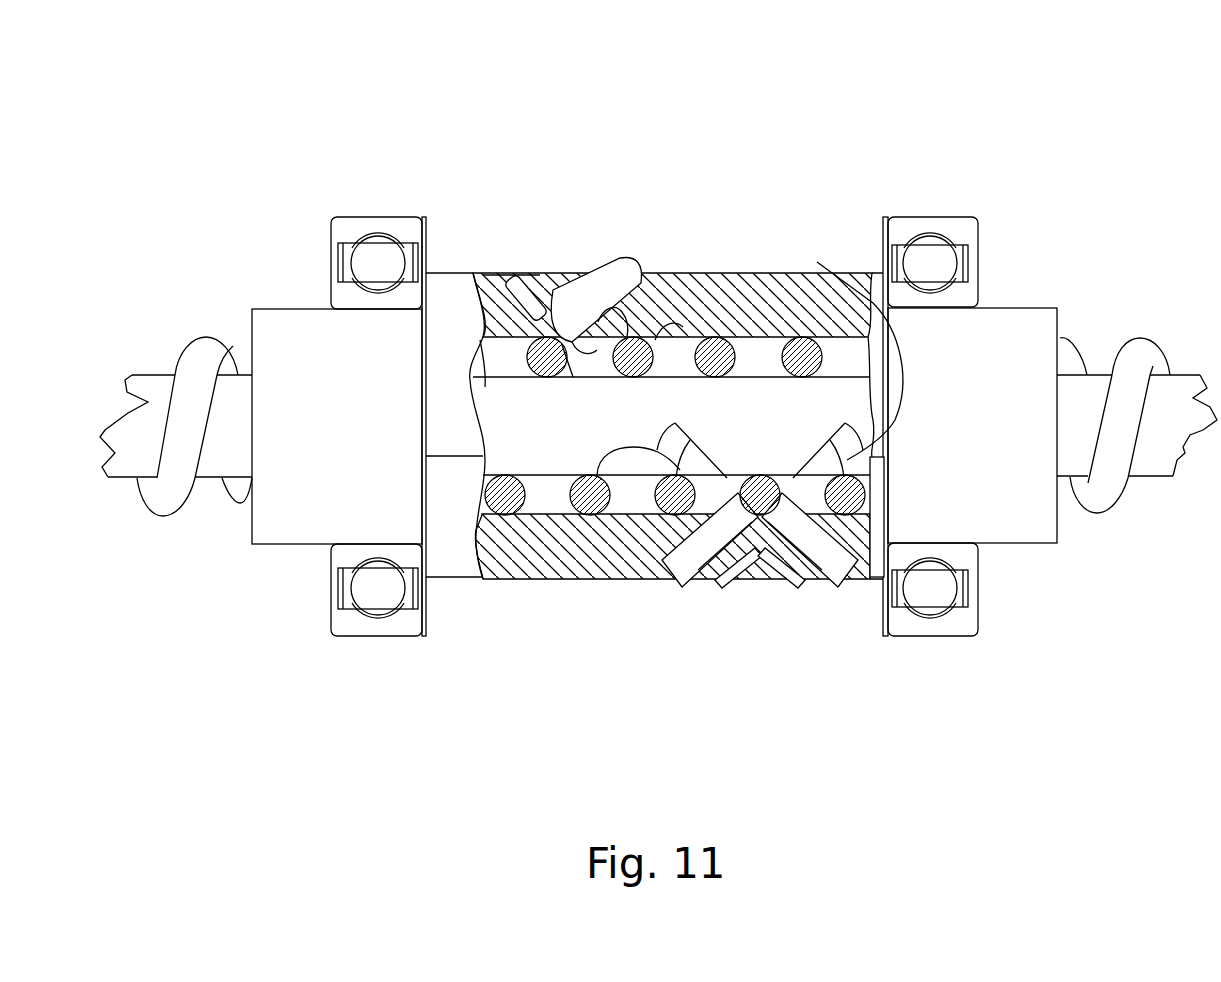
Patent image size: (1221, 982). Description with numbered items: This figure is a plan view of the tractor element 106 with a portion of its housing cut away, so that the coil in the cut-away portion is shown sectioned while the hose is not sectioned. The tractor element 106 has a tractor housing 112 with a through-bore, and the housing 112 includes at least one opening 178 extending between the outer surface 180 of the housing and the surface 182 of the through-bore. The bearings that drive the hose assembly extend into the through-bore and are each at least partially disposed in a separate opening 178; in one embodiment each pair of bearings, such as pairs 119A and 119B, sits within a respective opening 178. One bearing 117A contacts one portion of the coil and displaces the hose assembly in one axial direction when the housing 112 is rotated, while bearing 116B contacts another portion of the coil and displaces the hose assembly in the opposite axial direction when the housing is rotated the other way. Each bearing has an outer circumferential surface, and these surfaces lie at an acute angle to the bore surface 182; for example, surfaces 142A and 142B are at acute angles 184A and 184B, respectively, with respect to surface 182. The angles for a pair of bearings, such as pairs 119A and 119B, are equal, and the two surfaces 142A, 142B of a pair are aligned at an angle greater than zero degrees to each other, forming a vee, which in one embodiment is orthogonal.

The tractor element 106 is at (460, 640).
The tractor housing 112 is at (772, 248).
The bearing 116B is at (725, 622).
The bearing 117A is at (628, 262).
The pair of bearings 119A is at (512, 229).
The pair of bearings 119B is at (767, 622).
The outer circumferential surface 142A is at (673, 582).
The outer circumferential surface 142B is at (845, 582).
The opening 178 is at (543, 257).
The outer surface 180 is at (455, 288).
The surface of the through-bore 182 is at (662, 347).
The acute angle 184A is at (597, 475).
The acute angle 184B is at (817, 262).